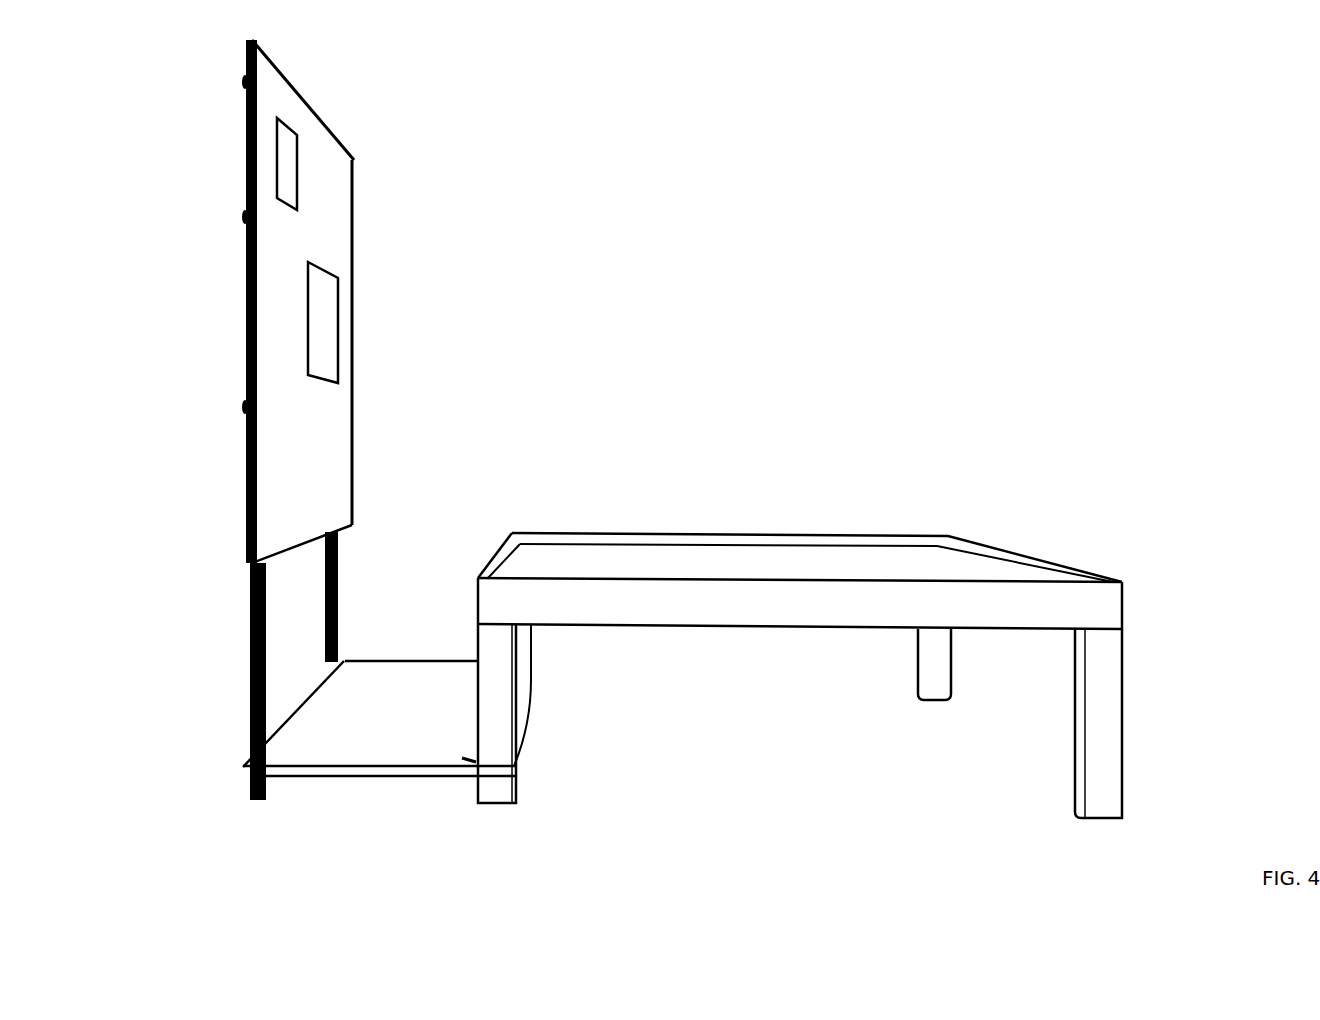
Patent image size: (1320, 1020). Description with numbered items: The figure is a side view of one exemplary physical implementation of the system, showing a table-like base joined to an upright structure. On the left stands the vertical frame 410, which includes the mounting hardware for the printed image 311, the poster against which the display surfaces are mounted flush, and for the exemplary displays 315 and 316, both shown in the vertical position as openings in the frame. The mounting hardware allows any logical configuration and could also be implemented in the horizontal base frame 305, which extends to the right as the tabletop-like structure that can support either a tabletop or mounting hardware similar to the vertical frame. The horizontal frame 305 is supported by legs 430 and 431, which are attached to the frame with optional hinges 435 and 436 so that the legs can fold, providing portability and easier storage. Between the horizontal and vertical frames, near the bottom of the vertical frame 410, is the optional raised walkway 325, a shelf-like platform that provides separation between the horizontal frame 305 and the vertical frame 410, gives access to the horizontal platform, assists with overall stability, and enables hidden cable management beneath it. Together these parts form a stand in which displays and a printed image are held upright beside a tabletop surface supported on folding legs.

The horizontal structure 305 is at (960, 556).
The mounted poster 311 is at (287, 484).
The display 315 is at (296, 137).
The display 316 is at (338, 322).
The raised walkway 325 is at (268, 776).
The vertical frame 410 is at (252, 607).
The leg 430 is at (1127, 683).
The leg 431 is at (512, 683).
The hinge 435 is at (470, 762).
The hinge 436 is at (1078, 638).